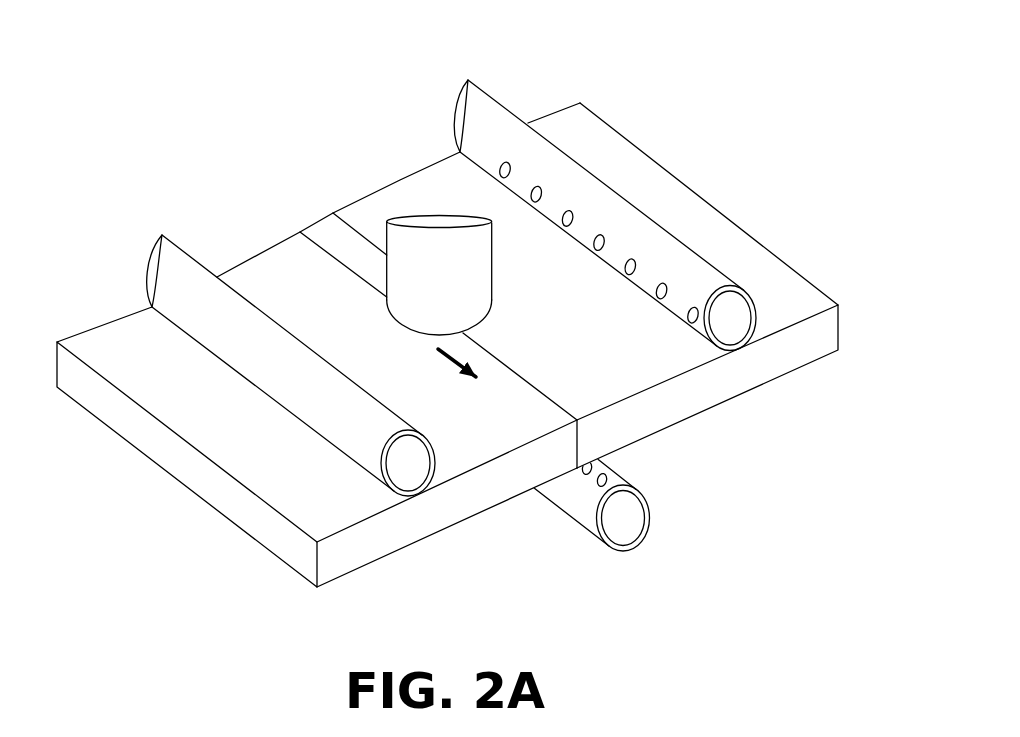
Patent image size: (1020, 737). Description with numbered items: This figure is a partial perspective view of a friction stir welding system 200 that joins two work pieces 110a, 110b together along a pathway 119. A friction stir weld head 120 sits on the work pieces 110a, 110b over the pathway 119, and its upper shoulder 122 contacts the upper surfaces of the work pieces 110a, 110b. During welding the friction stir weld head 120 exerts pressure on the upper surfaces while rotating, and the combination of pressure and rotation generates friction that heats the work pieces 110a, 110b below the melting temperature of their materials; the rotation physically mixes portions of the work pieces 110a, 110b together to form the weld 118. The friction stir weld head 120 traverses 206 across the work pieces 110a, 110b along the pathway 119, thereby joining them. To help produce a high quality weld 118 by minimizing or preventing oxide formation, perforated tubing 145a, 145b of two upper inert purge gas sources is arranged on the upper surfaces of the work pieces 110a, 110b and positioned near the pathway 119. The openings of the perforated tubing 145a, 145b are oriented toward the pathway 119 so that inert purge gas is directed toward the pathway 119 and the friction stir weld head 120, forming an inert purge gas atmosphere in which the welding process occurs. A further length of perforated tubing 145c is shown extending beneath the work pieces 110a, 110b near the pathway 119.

The friction stir welding system 200 is at (811, 78).
The work piece 110a is at (126, 465).
The work piece 110b is at (851, 291).
The weld 118 is at (323, 217).
The pathway 119 is at (553, 400).
The friction stir weld head 120 is at (500, 265).
The upper shoulder 122 is at (484, 322).
The traverse 206 is at (446, 358).
The perforated tubing 145a is at (175, 243).
The perforated tubing 145b is at (475, 86).
The third perforated tube 145c is at (651, 511).